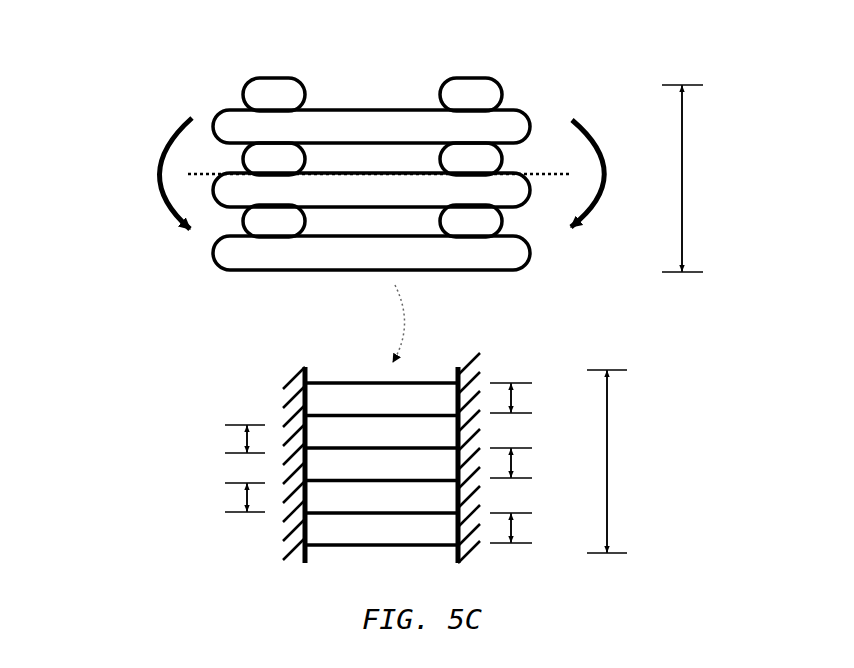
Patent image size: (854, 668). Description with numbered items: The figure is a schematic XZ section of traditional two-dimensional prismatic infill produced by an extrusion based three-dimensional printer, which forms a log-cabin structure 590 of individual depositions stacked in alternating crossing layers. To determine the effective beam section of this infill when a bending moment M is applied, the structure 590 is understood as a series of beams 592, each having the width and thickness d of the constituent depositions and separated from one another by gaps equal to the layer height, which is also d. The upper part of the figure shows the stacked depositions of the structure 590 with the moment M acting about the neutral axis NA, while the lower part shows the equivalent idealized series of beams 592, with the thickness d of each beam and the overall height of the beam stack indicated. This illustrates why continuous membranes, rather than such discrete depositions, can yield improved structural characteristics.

The log-cabin structure 590 is at (397, 160).
The series of beams 592 is at (391, 437).
The moment M is at (384, 173).
The neutral axis NA is at (380, 165).
The width and thickness of the constituent depositions d is at (376, 463).